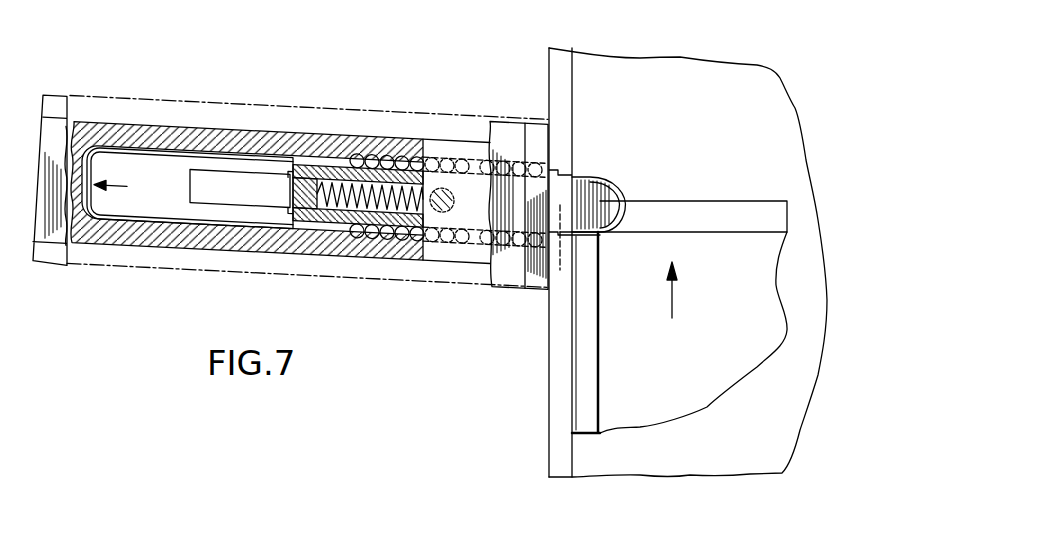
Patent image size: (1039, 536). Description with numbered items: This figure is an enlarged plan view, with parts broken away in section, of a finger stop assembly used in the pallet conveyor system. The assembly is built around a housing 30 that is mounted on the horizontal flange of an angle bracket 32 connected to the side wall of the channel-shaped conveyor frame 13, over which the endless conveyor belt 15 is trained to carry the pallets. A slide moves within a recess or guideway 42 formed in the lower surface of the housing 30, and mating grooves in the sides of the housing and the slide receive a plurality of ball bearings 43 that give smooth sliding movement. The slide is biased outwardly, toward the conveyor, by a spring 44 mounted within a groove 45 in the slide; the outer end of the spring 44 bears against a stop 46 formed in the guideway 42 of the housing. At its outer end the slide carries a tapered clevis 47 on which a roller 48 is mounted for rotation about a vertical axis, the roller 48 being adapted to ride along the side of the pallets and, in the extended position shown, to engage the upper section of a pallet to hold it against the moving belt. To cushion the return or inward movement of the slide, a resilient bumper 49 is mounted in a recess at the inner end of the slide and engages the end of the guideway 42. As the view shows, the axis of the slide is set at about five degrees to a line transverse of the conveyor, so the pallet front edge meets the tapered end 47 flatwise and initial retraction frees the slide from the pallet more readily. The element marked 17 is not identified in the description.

The conveyor frame 13 is at (560, 88).
The endless conveyor belt 15 is at (733, 74).
The bar 17 is at (737, 204).
The housing 30 is at (148, 124).
The angle bracket 32 is at (540, 137).
The guideway 42 is at (115, 219).
The ball bearings 43 is at (400, 152).
The spring 44 is at (343, 180).
The groove 45 is at (240, 178).
The stop 46 is at (289, 158).
The tapered clevis 47 is at (583, 195).
The roller 48 is at (627, 203).
The resilient bumper 49 is at (138, 180).